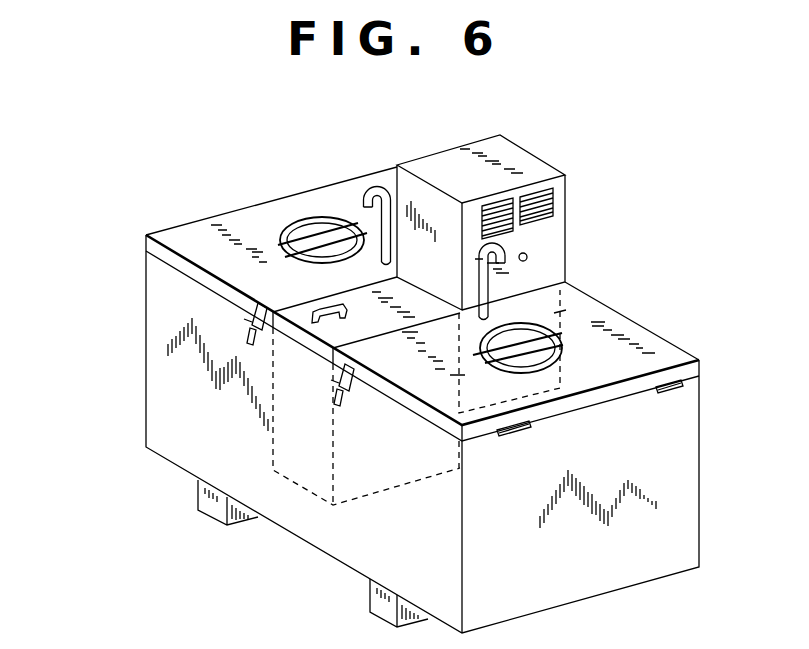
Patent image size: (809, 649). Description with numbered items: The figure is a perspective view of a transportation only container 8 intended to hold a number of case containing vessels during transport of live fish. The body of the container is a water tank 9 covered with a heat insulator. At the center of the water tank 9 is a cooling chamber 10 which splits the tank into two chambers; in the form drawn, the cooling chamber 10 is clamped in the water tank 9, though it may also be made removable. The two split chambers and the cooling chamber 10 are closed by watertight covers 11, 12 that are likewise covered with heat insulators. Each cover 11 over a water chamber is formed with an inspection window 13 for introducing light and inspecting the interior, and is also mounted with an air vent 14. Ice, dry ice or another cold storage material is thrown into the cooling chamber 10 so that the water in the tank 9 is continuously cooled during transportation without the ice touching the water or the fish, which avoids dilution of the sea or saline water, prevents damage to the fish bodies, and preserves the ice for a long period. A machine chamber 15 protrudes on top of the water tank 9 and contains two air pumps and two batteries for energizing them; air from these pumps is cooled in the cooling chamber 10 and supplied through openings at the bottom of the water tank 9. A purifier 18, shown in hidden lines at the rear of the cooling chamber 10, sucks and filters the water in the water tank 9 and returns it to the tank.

The transportation only container 8 is at (132, 340).
The water tank 9 is at (693, 483).
The cooling chamber 10 is at (307, 487).
The cover 11 is at (214, 224).
The cover 12 is at (307, 305).
The inspection window 13 is at (312, 226).
The air vent 14 is at (373, 191).
The machine chamber 15 is at (530, 162).
The purifier 18 is at (560, 310).